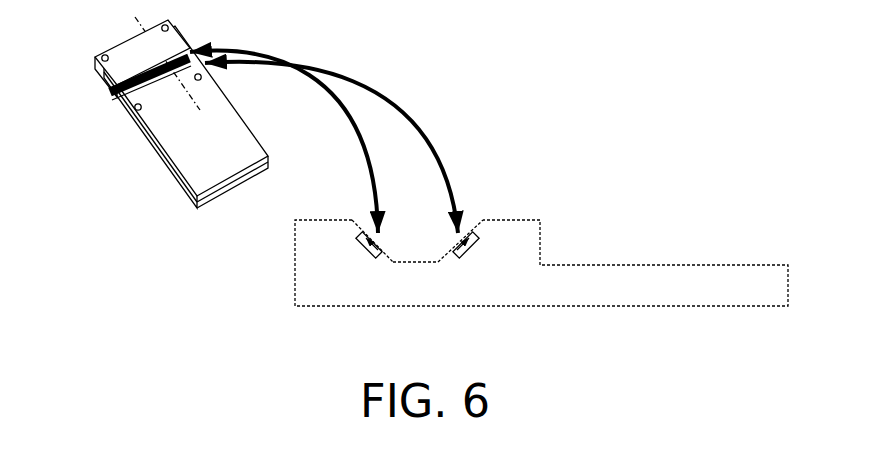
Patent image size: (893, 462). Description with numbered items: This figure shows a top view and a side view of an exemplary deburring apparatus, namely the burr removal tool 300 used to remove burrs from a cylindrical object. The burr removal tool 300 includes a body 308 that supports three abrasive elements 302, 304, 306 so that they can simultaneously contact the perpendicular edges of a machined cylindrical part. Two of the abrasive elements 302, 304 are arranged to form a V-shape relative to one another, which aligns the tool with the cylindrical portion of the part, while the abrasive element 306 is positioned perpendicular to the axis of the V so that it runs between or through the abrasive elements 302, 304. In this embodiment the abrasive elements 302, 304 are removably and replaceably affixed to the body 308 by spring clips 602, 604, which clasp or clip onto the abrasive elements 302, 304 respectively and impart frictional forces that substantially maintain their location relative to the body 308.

The burr removal tool 300 is at (275, 247).
The abrasive element 302 is at (121, 109).
The abrasive element 304 is at (112, 93).
The abrasive element 306 is at (152, 70).
The body 308 is at (327, 213).
The spring clip 602 is at (388, 263).
The spring clip 604 is at (489, 236).